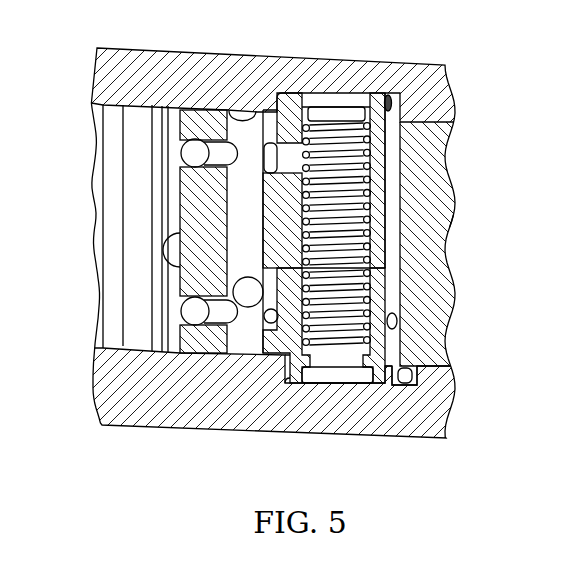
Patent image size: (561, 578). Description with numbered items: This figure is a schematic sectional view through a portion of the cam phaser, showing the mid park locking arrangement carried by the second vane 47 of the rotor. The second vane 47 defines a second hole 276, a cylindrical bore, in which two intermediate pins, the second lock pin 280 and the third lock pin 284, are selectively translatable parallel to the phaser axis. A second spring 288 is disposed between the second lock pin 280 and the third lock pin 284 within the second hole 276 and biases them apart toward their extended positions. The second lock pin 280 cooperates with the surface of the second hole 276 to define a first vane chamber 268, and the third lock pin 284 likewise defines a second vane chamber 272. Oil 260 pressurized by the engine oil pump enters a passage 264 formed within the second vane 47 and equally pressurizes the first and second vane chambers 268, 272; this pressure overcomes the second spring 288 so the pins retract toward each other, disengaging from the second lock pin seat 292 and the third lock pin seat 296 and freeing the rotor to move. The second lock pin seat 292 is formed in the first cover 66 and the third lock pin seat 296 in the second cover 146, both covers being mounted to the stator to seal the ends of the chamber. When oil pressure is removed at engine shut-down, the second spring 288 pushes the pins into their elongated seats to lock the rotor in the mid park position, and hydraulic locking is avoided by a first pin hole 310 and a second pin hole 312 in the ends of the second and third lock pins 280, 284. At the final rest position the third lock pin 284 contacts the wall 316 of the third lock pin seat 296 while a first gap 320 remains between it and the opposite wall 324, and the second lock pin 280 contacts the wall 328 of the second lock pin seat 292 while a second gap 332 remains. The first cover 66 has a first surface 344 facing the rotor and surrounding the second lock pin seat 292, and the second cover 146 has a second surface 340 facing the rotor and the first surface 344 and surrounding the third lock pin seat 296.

The second vane 47 is at (425, 242).
The first cover 66 is at (430, 100).
The second cover 146 is at (185, 393).
The oil 260 is at (266, 162).
The passage 264 is at (188, 162).
The first vane chamber 268 is at (393, 163).
The second vane chamber 272 is at (384, 330).
The second hole 276 is at (452, 220).
The second lock pin 280 is at (380, 146).
The third lock pin 284 is at (396, 332).
The second spring 288 is at (392, 240).
The second lock pin seat 292 is at (270, 104).
The third lock pin seat 296 is at (415, 372).
The first pin hole 310 is at (368, 100).
The second pin hole 312 is at (322, 372).
The wall of third lock pin seat 316 is at (286, 356).
The first gap 320 is at (394, 372).
The wall of third seat 324 is at (412, 378).
The wall of second lock pin seat 328 is at (390, 96).
The second gap 332 is at (266, 111).
The second surface 340 is at (248, 365).
The first surface 344 is at (218, 108).